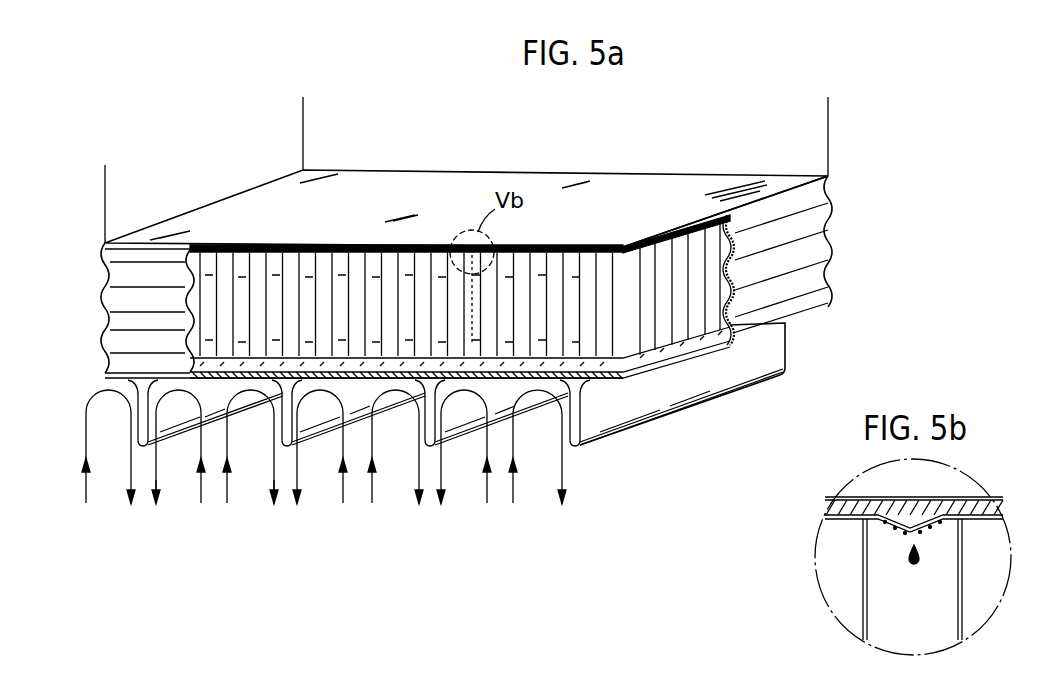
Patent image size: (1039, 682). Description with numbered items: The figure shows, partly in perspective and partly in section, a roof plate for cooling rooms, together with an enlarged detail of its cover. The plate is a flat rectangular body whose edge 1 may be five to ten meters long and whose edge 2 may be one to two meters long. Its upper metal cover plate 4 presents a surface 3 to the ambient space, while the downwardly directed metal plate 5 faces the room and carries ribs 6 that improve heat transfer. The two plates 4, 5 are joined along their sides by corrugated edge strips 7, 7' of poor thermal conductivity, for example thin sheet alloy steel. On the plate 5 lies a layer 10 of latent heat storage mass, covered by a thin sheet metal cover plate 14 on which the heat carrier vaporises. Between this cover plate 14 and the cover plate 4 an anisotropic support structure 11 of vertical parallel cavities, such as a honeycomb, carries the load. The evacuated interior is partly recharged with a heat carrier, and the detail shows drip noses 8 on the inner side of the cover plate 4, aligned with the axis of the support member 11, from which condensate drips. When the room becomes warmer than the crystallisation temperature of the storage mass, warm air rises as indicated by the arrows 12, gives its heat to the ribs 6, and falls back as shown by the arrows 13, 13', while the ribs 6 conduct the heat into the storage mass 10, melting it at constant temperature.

In FIG. 5A, the edge 1 is at (303, 103).
In FIG. 5A, the edge 2 is at (828, 103).
In FIG. 5A, the surface 3 is at (243, 245).
In FIG. 5B, the surface 3 is at (975, 497).
In FIG. 5A, the cover plate 4 is at (655, 240).
In FIG. 5B, the cover plate 4 is at (990, 515).
In FIG. 5A, the downwardly directed plate 5 is at (698, 348).
In FIG. 5A, the ribs 6 is at (138, 414).
In FIG. 5A, the corrugated edge strip 7 is at (803, 254).
In FIG. 5A, the corrugated edge strip 7' is at (128, 308).
In FIG. 5B, the drip noses 8 is at (895, 525).
In FIG. 5A, the layer of latent heat storage mass 10 is at (648, 360).
In FIG. 5A, the anisotropic support structure 11 is at (543, 268).
In FIG. 5B, the anisotropic support structure 11 is at (870, 622).
In FIG. 5A, the arrows 12 is at (85, 492).
In FIG. 5A, the arrows 13 is at (255, 509).
In FIG. 5A, the arrows 13' is at (183, 509).
In FIG. 5A, the cover plate 14 is at (710, 338).